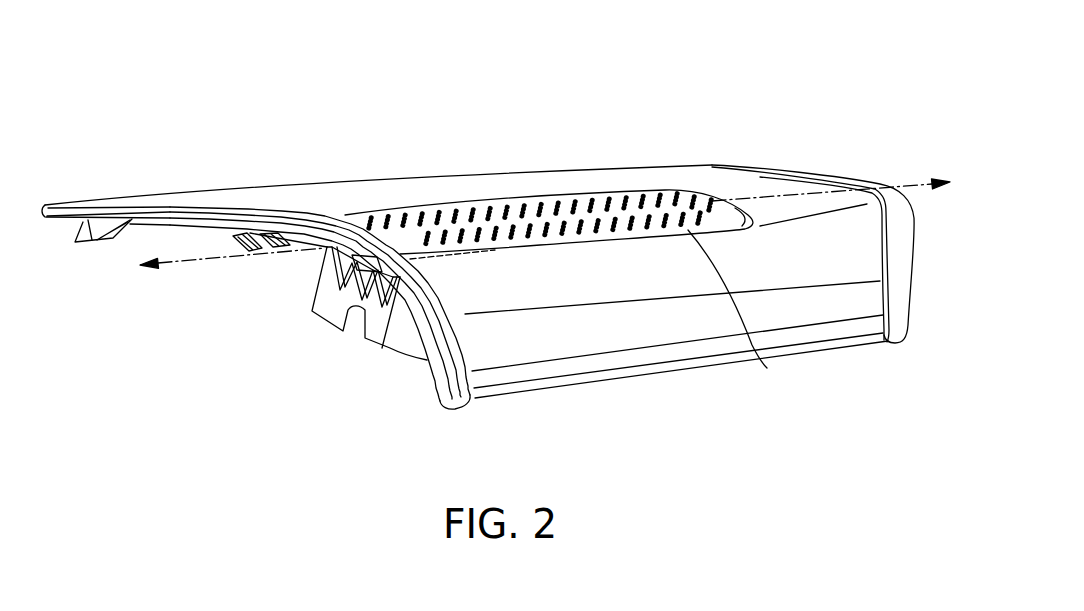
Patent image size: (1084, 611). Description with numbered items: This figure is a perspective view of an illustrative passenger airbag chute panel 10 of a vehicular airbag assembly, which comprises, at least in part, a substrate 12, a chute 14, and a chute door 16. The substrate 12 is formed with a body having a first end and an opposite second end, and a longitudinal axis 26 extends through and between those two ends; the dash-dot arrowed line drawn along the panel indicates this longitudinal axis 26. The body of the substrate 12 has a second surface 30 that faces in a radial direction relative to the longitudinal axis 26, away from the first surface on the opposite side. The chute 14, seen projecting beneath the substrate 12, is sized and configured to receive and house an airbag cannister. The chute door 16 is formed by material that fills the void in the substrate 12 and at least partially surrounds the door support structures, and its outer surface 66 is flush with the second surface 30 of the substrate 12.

The passenger airbag chute panel 10 is at (632, 118).
The substrate 12 is at (334, 200).
The chute 14 is at (318, 292).
The chute door 16 is at (550, 207).
The longitudinal axis 26 is at (905, 178).
The second surface 30 is at (708, 184).
The outer surface 66 is at (767, 368).